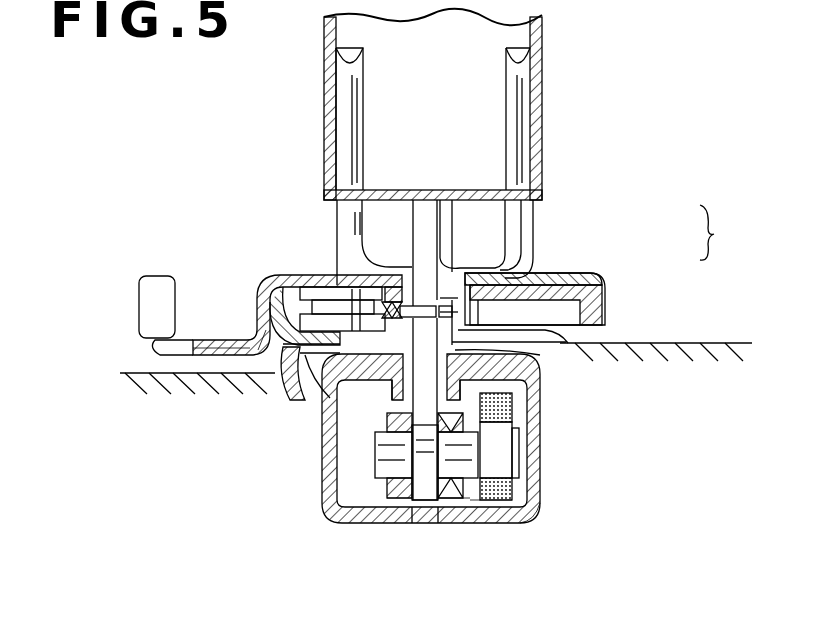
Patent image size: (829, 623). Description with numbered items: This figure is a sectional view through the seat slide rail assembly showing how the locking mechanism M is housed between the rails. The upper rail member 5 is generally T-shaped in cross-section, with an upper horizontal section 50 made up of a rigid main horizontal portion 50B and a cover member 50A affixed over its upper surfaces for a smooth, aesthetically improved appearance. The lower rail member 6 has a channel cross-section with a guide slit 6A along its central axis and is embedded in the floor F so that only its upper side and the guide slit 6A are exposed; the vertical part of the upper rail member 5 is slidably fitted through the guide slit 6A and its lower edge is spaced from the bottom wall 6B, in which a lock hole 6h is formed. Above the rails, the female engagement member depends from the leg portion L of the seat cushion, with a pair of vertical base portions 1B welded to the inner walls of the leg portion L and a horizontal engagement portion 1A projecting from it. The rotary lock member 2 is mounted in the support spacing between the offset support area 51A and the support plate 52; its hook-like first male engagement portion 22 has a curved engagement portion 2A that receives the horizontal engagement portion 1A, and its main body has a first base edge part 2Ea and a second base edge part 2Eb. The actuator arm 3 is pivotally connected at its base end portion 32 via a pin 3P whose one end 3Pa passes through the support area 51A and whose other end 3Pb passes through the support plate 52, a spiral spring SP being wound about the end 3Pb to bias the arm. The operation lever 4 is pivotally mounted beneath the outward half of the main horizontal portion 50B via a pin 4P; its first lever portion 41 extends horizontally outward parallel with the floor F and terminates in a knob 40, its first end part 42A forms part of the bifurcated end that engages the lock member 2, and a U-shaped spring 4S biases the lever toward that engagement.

The upper rail member 5 is at (249, 216).
The leg portion L is at (545, 75).
The vertical base portions 1B is at (365, 97).
The horizontal engagement portion 1A is at (527, 232).
The first male engagement portion 22 is at (447, 200).
The rotary lock member 2 is at (410, 227).
The curved engagement portion 2A is at (340, 372).
The first base edge part 2Ea is at (398, 440).
The second base edge part 2Eb is at (430, 503).
The first end part 42A is at (430, 305).
The operation lever 4 is at (218, 335).
The pin 4P is at (320, 300).
The U-shaped spring 4S is at (265, 355).
The knob 40 is at (155, 283).
The first lever portion 41 is at (222, 352).
The upper horizontal section 50 is at (728, 232).
The cover member 50A is at (565, 275).
The main horizontal portion 50B is at (592, 298).
The actuator arm 3 is at (560, 338).
The floor F is at (688, 342).
The lower rail member 6 is at (548, 458).
The guide slit 6A is at (522, 355).
The bottom wall 6B is at (505, 522).
The lock hole 6h is at (418, 520).
The spiral spring SP is at (507, 428).
The pin 3P is at (395, 480).
The one end of pin 3Pa is at (380, 470).
The another end of pin 3Pb is at (515, 472).
The offset support area 51A is at (385, 502).
The base end portion 32 is at (450, 503).
The support plate 52 is at (470, 507).
The locking mechanism M is at (692, 104).